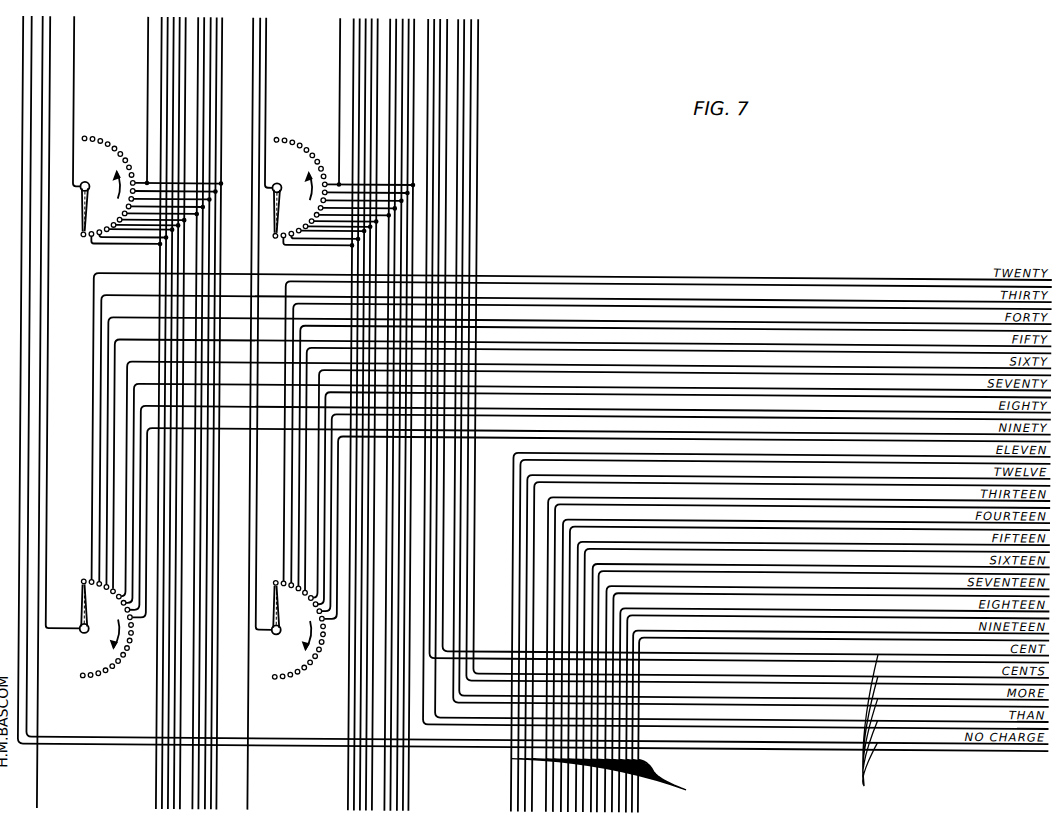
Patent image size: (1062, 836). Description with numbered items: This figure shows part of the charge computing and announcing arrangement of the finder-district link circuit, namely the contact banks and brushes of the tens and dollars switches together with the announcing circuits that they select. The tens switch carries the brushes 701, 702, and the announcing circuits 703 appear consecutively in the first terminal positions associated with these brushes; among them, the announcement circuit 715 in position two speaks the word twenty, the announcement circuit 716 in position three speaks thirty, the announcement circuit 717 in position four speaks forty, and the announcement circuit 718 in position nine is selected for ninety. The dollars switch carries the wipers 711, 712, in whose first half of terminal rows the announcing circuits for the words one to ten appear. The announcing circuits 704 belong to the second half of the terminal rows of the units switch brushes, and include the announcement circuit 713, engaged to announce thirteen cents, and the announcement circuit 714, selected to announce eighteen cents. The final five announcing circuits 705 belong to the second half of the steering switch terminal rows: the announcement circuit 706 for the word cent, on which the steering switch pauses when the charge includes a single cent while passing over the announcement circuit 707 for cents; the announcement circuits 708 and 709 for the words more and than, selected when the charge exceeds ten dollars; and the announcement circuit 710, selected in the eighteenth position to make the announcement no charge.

The brush of the tens switch 701 is at (291, 622).
The brush of the tens switch 702 is at (99, 622).
The announcing circuits 703 is at (679, 434).
The announcing circuits 704 is at (694, 788).
The announcing circuits 705 is at (881, 727).
The announcement circuit 706 is at (713, 650).
The announcement circuit 707 is at (782, 672).
The announcement circuit 708 is at (924, 694).
The announcement circuit 709 is at (949, 717).
The announcement circuit 710 is at (1014, 739).
The wiper of the dollars switch 711 is at (273, 222).
The wiper of the dollars switch 712 is at (82, 202).
The announcement circuit 713 is at (572, 492).
The announcement circuit 714 is at (646, 604).
The announcement circuit 715 is at (690, 274).
The announcement circuit 716 is at (790, 296).
The announcement circuit 717 is at (848, 318).
The announcement circuit 718 is at (917, 428).